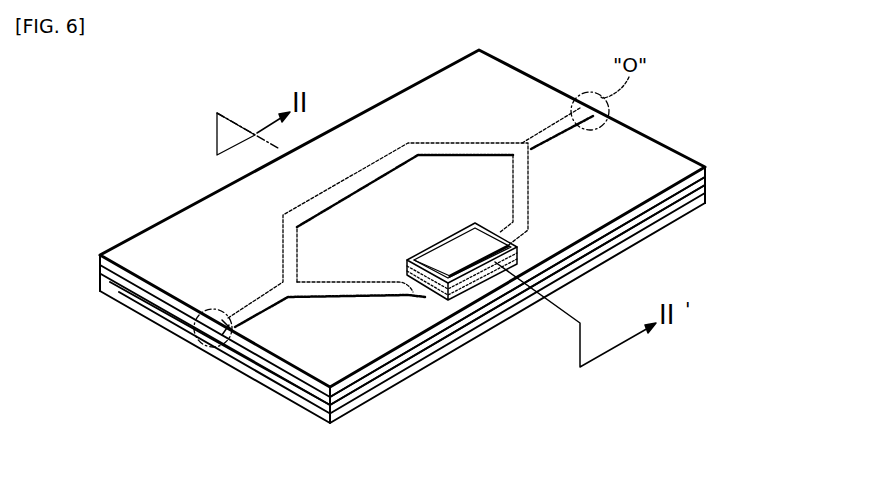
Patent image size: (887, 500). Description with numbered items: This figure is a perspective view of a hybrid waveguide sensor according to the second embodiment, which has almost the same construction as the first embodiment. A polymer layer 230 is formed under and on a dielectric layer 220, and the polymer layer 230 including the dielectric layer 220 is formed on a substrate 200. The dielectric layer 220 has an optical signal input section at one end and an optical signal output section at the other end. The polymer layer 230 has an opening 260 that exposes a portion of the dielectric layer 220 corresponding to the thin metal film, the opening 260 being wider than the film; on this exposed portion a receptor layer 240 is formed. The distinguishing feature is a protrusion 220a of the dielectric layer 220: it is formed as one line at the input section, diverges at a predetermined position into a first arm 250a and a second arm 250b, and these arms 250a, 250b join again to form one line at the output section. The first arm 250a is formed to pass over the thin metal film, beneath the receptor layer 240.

The substrate 200 is at (352, 412).
The dielectric layer 220 is at (100, 272).
The protrusion 220a is at (224, 318).
The polymer layer 230 is at (706, 170).
The receptor layer 240 is at (520, 251).
The first arm 250a is at (414, 284).
The second arm 250b is at (385, 167).
The opening 260 is at (460, 272).